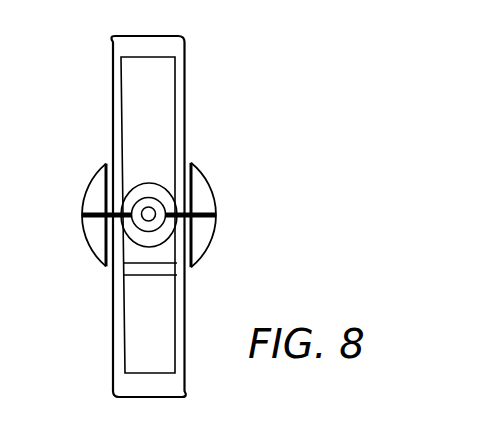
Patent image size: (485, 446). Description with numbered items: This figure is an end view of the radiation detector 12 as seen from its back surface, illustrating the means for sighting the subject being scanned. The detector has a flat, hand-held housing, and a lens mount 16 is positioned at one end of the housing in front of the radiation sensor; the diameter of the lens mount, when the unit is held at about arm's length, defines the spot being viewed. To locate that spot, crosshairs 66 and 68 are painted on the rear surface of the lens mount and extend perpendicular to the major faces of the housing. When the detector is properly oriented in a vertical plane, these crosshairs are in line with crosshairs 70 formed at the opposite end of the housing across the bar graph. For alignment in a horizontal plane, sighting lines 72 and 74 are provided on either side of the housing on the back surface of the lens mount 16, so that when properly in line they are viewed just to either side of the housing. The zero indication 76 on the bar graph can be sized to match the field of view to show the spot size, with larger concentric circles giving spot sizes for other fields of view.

The radiation detector 12 is at (148, 216).
The lens mount 16 is at (157, 196).
The crosshair 66 is at (86, 222).
The crosshair 68 is at (200, 222).
The crosshairs 70 is at (175, 225).
The sighting line 72 is at (105, 185).
The sighting line 74 is at (190, 182).
The zero indication 76 is at (156, 211).